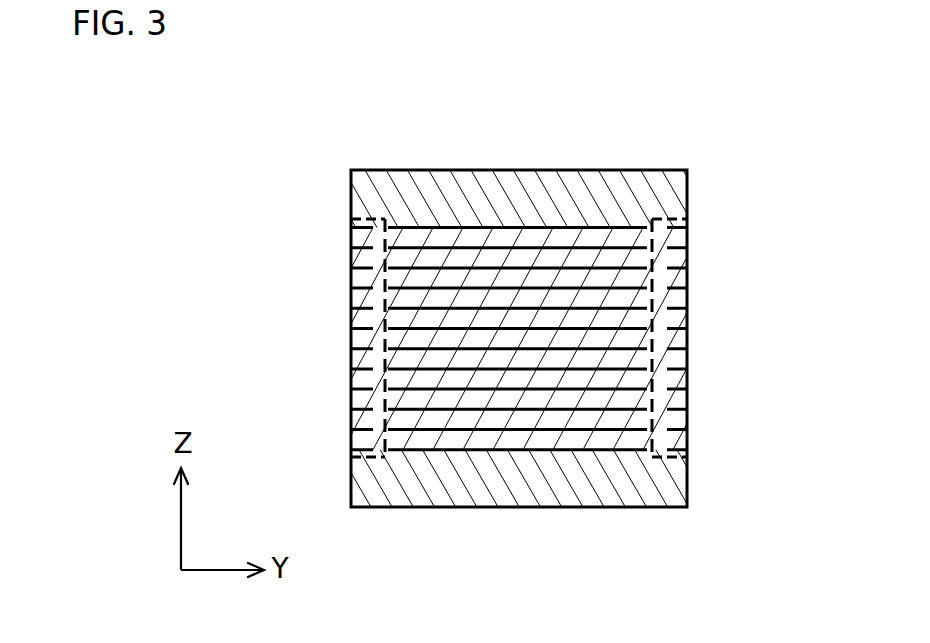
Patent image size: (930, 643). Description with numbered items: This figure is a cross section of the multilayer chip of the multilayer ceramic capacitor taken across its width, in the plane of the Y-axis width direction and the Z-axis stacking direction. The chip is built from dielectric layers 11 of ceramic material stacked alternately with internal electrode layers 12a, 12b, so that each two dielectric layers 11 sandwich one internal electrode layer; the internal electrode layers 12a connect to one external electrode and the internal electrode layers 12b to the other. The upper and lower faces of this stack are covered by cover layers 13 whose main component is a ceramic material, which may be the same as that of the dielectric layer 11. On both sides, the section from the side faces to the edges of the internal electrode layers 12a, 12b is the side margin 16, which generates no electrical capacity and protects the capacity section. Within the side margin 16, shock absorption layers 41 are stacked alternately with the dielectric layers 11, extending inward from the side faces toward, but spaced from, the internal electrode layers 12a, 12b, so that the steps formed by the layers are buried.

The dielectric layer 11 is at (597, 422).
The internal electrode layer 12a is at (552, 412).
The internal electrode layer 12b is at (452, 388).
The cover layer 13 is at (494, 188).
The side margin 16 is at (380, 217).
The shock absorption layer 41 is at (356, 248).